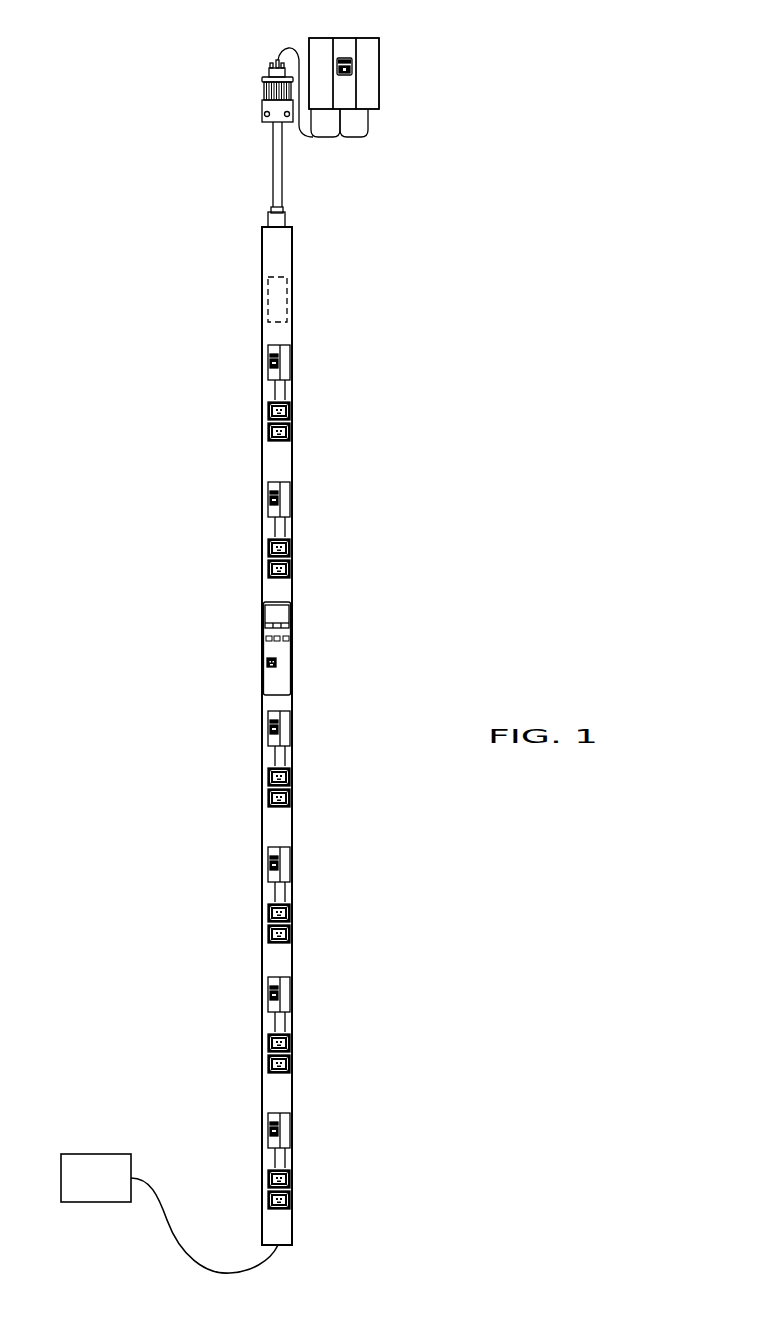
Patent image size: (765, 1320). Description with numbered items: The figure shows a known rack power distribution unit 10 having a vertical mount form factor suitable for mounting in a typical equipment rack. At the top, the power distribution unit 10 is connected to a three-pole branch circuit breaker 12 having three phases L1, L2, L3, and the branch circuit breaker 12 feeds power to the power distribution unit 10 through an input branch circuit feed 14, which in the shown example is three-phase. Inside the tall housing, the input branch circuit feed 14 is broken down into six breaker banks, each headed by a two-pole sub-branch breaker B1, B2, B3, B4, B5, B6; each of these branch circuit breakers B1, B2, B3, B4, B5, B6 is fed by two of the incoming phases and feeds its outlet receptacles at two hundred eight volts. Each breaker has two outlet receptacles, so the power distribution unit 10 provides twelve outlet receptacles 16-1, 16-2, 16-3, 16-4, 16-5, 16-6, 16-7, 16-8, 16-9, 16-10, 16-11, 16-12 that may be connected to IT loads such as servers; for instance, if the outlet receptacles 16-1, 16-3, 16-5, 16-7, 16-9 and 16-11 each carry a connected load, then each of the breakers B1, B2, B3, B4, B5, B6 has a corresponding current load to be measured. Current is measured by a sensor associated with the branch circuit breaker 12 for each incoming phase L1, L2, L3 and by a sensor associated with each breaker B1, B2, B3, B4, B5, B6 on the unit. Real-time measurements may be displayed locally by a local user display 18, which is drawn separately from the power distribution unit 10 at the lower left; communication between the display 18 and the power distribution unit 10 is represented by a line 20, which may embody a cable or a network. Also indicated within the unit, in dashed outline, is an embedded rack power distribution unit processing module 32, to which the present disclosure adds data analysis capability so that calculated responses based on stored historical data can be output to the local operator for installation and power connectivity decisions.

The power distribution unit 10 is at (128, 716).
The 3-pole branch circuit breaker 12 is at (402, 93).
The input branch circuit feed 14 is at (273, 162).
The phase L1 is at (320, 43).
The phase L2 is at (343, 43).
The phase L3 is at (368, 53).
The embedded rack power distribution unit processing module 32 is at (256, 313).
The branch circuit breaker B1 is at (290, 362).
The branch circuit breaker B2 is at (290, 499).
The branch circuit breaker B3 is at (290, 728).
The branch circuit breaker B4 is at (290, 864).
The branch circuit breaker B5 is at (290, 994).
The branch circuit breaker B6 is at (290, 1130).
The outlet receptacle 16-1 is at (267, 412).
The outlet receptacle 16-2 is at (292, 430).
The outlet receptacle 16-3 is at (267, 549).
The outlet receptacle 16-4 is at (292, 567).
The outlet receptacle 16-5 is at (267, 778).
The outlet receptacle 16-6 is at (292, 796).
The outlet receptacle 16-7 is at (267, 914).
The outlet receptacle 16-8 is at (292, 932).
The outlet receptacle 16-9 is at (267, 1044).
The outlet receptacle 16-10 is at (292, 1062).
The outlet receptacle 16-11 is at (267, 1180).
The outlet receptacle 16-12 is at (292, 1198).
The local user display 18 is at (92, 1154).
The communication line 20 is at (171, 1225).